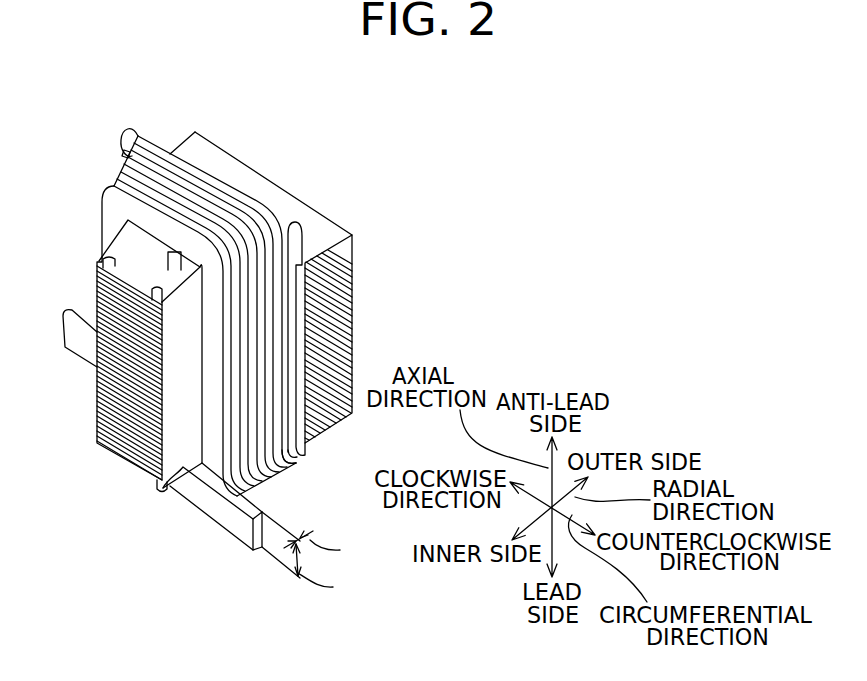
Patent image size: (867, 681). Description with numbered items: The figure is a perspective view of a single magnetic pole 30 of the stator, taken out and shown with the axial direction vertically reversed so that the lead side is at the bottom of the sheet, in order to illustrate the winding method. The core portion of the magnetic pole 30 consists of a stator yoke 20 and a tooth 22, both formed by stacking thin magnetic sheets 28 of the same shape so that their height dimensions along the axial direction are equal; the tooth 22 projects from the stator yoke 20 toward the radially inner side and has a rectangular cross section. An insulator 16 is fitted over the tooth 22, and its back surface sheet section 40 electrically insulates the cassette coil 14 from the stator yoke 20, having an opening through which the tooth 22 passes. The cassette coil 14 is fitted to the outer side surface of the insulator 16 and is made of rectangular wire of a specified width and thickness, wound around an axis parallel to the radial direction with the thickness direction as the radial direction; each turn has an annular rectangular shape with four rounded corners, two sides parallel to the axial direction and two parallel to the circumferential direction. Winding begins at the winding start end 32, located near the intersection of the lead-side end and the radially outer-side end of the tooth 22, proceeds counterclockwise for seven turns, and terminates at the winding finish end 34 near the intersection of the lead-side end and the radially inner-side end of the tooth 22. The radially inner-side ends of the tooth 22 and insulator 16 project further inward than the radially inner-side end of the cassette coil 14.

The magnetic pole 30 is at (86, 160).
The cassette coil 14 is at (233, 192).
The stator yoke 20 is at (323, 227).
The thin magnetic sheet 28 is at (110, 423).
The tooth 22 is at (162, 278).
The insulator 16 is at (118, 251).
The winding start end 32 is at (70, 335).
The winding finish end 34 is at (230, 518).
The back surface sheet section 40 is at (293, 457).